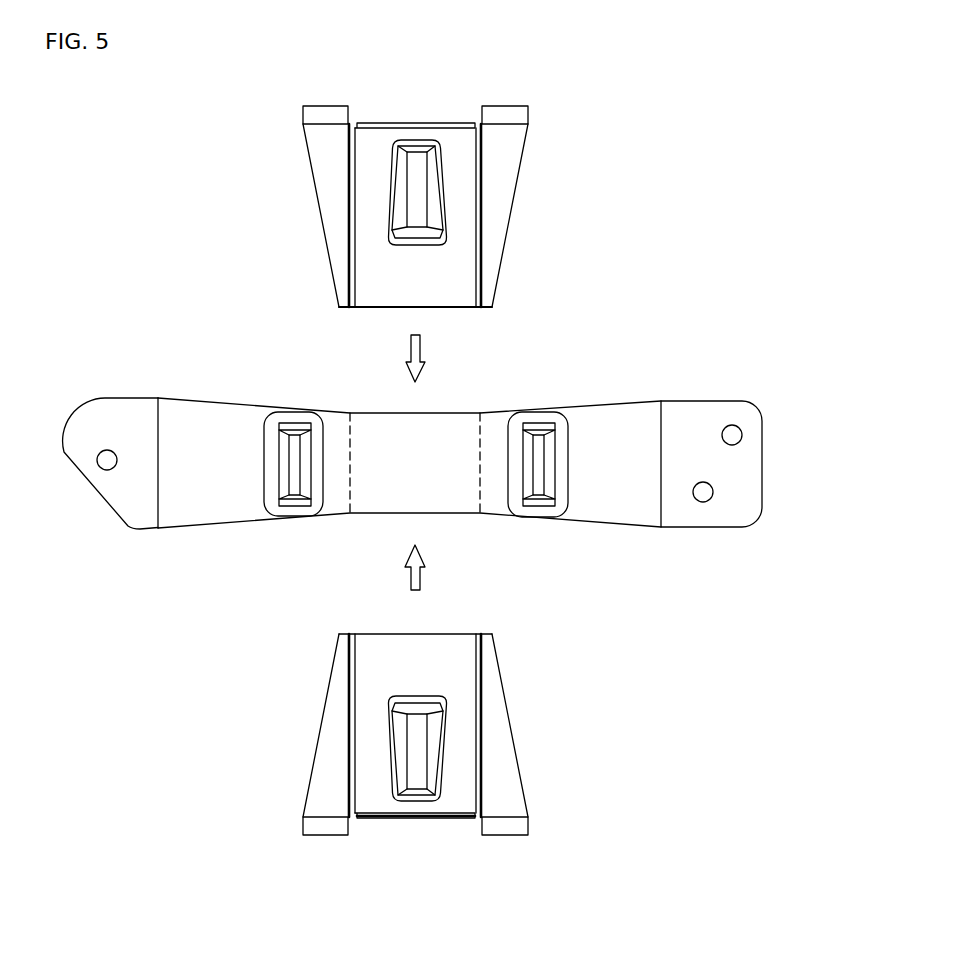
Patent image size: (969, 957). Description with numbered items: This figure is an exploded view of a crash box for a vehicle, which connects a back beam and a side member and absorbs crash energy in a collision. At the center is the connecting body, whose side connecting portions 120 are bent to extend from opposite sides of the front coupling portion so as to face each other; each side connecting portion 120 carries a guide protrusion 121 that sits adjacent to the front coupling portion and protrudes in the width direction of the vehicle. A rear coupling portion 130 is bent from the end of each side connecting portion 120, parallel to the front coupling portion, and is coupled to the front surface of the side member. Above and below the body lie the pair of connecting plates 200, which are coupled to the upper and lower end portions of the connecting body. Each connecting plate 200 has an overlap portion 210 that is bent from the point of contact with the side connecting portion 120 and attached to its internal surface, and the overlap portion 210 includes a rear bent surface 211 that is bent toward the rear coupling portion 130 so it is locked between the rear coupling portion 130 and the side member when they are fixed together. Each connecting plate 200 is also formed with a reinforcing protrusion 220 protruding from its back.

The side connecting portion 120 is at (608, 508).
The guide protrusion 121 is at (540, 425).
The rear coupling portion 130 is at (740, 467).
The connecting plate 200 is at (370, 784).
The overlap portion 210 is at (505, 782).
The rear bent surface 211 is at (330, 827).
The reinforcing protrusion 220 is at (417, 783).